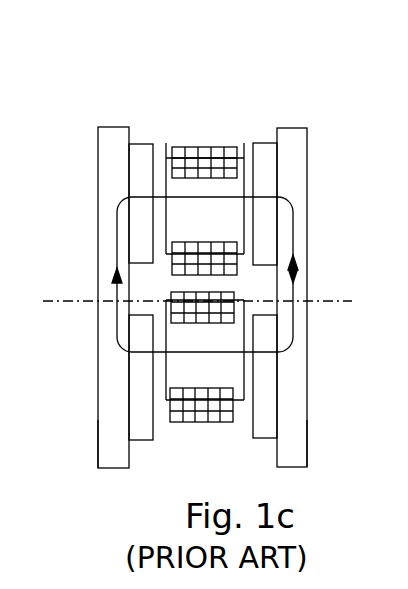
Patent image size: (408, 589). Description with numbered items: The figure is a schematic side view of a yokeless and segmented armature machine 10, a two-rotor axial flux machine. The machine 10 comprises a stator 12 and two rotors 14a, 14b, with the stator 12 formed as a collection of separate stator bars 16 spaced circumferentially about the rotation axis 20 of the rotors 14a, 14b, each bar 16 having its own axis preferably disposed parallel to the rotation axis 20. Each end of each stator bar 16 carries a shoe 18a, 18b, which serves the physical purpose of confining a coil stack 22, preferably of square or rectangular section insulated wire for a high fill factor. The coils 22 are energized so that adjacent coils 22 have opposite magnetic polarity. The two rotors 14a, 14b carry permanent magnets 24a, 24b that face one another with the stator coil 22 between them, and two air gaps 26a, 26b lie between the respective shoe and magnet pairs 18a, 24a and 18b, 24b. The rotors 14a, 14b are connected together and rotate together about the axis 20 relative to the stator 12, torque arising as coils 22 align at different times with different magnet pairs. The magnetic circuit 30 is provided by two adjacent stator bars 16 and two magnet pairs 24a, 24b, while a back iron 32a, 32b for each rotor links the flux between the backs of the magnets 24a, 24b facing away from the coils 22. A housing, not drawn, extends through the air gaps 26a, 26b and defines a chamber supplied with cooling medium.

The yokeless and segmented armature machine 10 is at (238, 49).
The stator 12 is at (191, 439).
The rotor 14a is at (111, 469).
The rotor 14b is at (288, 468).
The stator bar 16 is at (196, 148).
The shoe 18a is at (162, 173).
The shoe 18b is at (246, 142).
The rotation axis 20 is at (65, 299).
The coil stack 22 is at (177, 147).
The permanent magnet 24a is at (140, 240).
The permanent magnet 24b is at (265, 244).
The air gap 26a is at (150, 140).
The air gap 26b is at (252, 162).
The magnetic circuit 30 is at (296, 318).
The back iron 32a is at (108, 433).
The back iron 32b is at (293, 426).